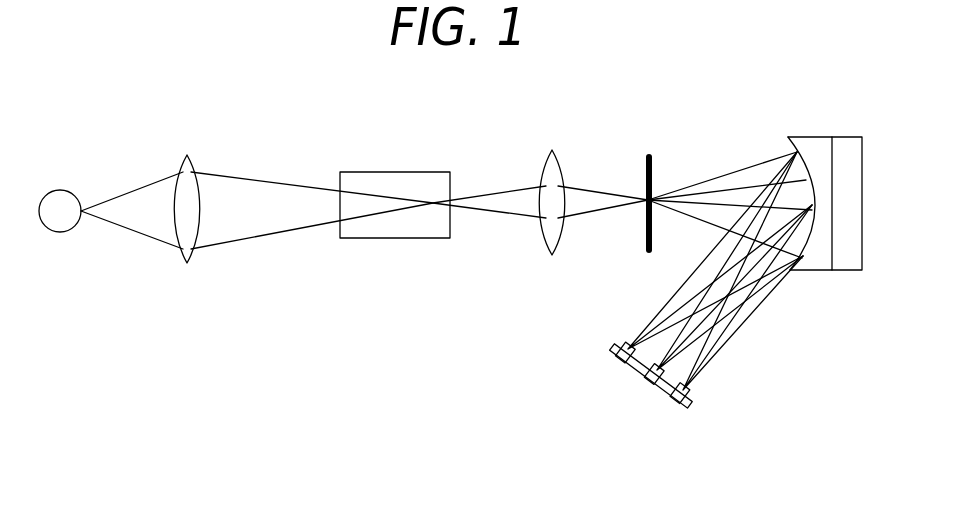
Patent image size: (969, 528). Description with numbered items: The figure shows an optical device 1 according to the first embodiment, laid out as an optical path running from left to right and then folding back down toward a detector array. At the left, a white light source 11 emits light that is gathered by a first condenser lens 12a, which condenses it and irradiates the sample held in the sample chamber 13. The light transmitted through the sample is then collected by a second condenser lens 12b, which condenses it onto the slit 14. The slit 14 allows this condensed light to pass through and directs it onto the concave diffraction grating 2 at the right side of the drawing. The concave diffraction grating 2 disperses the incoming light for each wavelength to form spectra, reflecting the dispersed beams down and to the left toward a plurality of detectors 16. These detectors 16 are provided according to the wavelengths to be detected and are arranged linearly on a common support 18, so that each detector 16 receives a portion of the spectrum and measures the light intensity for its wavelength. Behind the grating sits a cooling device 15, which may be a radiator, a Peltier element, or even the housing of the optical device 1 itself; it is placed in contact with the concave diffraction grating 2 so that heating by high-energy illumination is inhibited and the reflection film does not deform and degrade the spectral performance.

The optical device 1 is at (305, 100).
The white light source 11 is at (66, 190).
The condenser lens 12a is at (194, 158).
The condenser lens 12b is at (562, 153).
The sample chamber 13 is at (405, 172).
The slit 14 is at (651, 157).
The concave diffraction grating 2 is at (812, 137).
The cooling device 15 is at (846, 137).
The detectors 16 is at (616, 358).
The detector substrate 18 is at (668, 402).